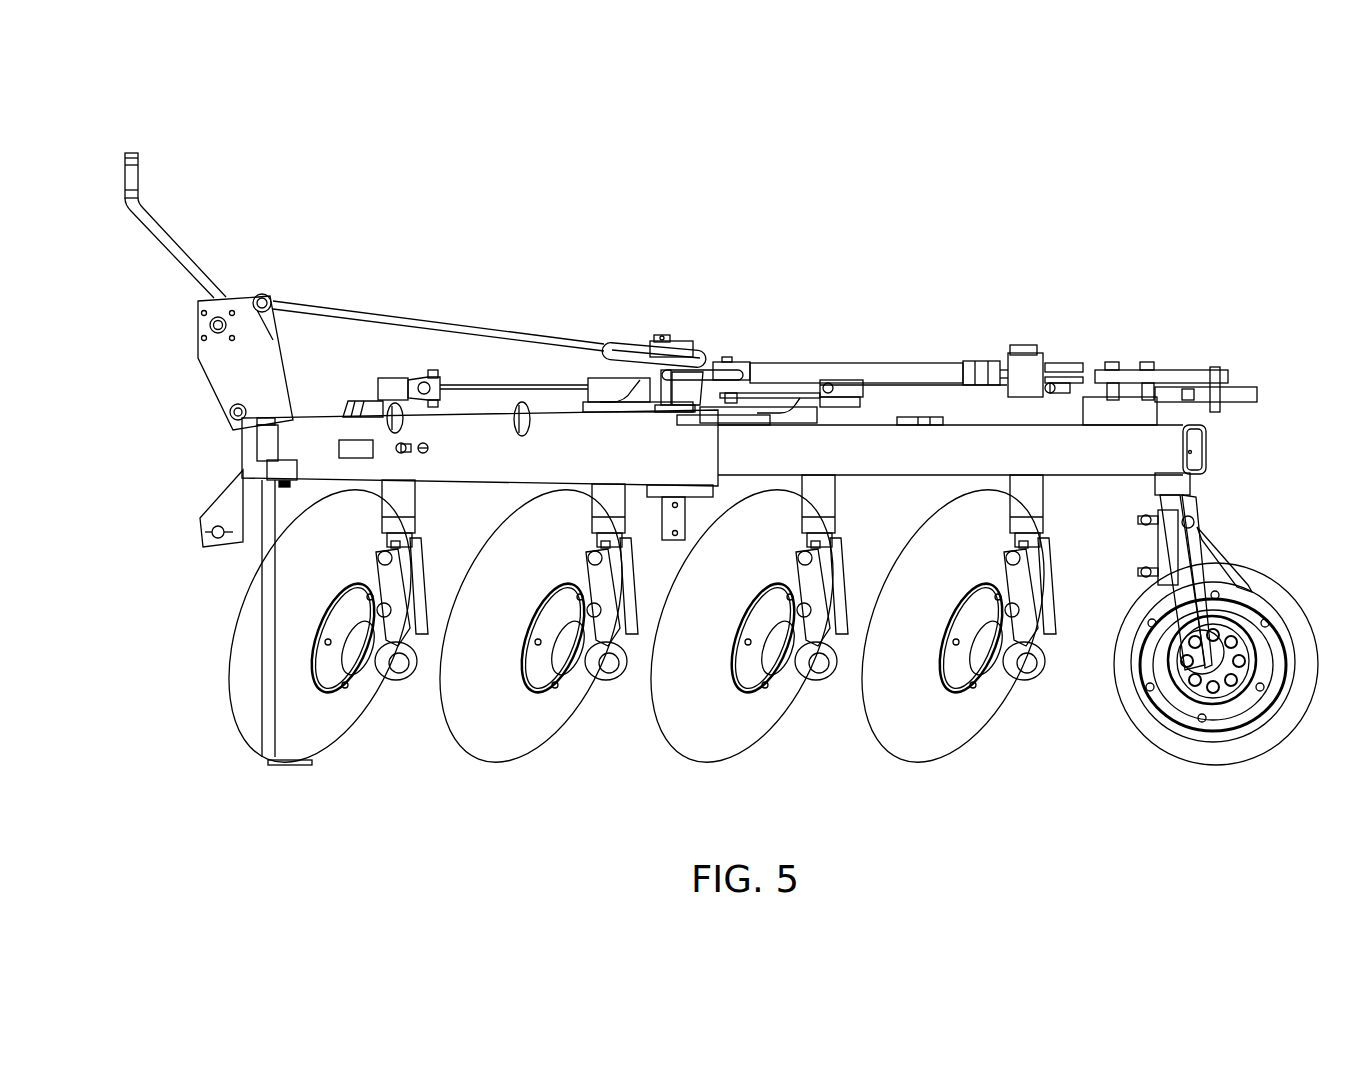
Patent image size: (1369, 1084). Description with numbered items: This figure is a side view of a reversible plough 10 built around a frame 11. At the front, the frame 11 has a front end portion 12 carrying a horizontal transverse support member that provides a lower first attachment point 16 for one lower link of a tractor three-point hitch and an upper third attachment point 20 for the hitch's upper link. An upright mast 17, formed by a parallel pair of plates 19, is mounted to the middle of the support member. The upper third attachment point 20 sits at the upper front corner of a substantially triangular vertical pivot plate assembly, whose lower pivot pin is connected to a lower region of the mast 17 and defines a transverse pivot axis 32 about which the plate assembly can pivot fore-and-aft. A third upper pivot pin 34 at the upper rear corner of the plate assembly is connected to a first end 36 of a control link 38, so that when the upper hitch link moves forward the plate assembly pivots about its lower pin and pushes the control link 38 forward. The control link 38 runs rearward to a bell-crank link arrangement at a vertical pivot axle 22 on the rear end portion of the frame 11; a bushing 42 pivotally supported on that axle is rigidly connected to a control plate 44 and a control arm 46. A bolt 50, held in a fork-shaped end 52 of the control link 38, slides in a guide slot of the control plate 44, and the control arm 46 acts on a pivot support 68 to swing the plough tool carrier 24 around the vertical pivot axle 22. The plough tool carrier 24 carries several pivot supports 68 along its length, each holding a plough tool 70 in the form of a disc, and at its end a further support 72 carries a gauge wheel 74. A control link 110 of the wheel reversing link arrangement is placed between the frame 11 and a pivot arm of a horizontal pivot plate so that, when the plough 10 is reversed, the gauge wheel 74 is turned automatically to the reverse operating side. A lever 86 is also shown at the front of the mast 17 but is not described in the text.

The reversible plough 10 is at (810, 206).
The frame 11 is at (484, 492).
The front end portion 12 is at (296, 386).
The lower first attachment point 16 is at (212, 531).
The upright mast 17 is at (190, 367).
The plates 19 is at (225, 381).
The upper third attachment point 20 is at (210, 325).
The vertical pivot axle 22 is at (671, 543).
The plough tool carrier 24 is at (882, 450).
The transverse pivot axis 32 is at (230, 408).
The third upper pivot pin 34 is at (262, 295).
The first end 36 is at (272, 300).
The control link 38 is at (453, 332).
The bushing 42 is at (705, 360).
The control plate 44 is at (650, 338).
The control arm 46 is at (618, 342).
The bolt 50 is at (664, 333).
The fork-shaped end 52 is at (636, 372).
The pivot supports 68 is at (398, 502).
The plough tools 70 is at (248, 693).
The support 72 is at (1180, 483).
The gauge wheel 74 is at (1266, 598).
The lever 86 is at (160, 238).
The control link 110 is at (827, 360).